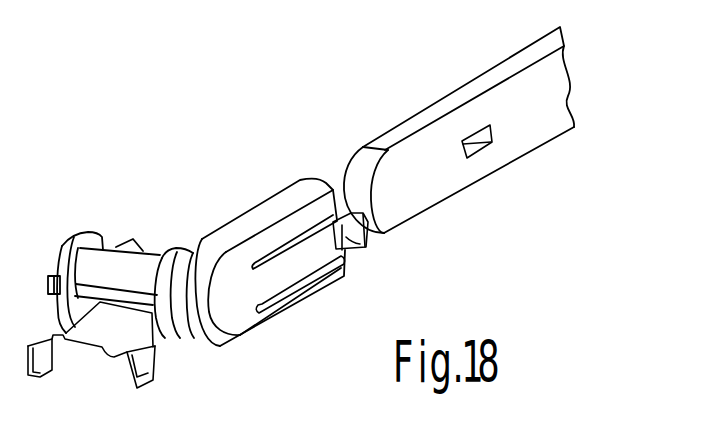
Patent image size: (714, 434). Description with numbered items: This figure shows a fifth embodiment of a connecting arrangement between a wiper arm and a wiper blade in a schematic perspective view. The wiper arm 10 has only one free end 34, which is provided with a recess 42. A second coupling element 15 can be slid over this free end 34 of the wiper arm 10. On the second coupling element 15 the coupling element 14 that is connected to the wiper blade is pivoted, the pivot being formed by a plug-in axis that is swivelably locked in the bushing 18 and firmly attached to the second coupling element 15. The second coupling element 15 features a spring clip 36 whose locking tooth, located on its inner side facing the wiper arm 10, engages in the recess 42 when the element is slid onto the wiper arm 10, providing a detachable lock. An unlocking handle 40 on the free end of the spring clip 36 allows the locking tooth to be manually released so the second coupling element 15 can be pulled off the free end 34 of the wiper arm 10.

The wiper arm 10 is at (535, 98).
The coupling element 14 is at (98, 332).
The second coupling element 15 is at (263, 218).
The bushing 18 is at (103, 270).
The free end 34 is at (422, 127).
The spring clip 36 is at (298, 260).
The unlocking handle 40 is at (358, 245).
The recess 42 is at (481, 147).